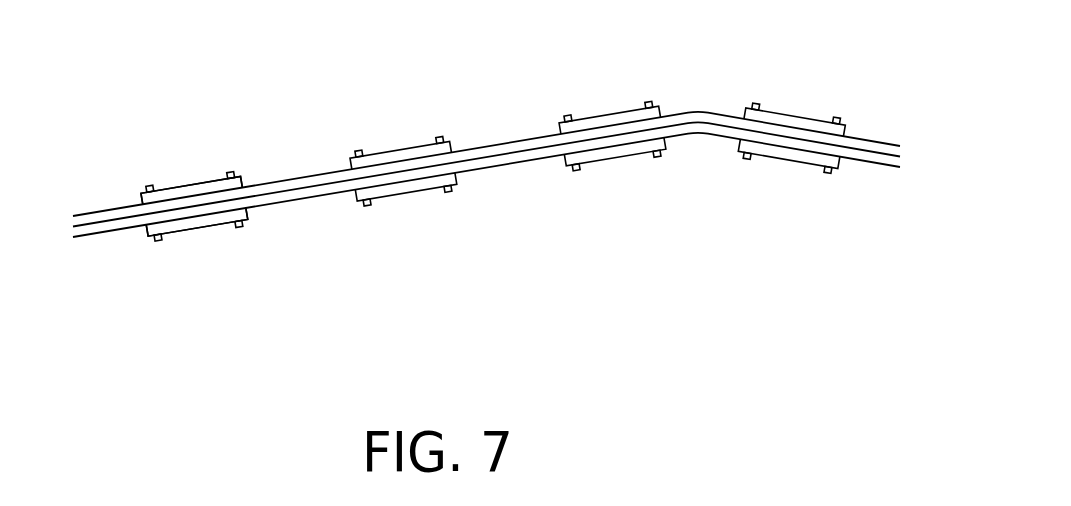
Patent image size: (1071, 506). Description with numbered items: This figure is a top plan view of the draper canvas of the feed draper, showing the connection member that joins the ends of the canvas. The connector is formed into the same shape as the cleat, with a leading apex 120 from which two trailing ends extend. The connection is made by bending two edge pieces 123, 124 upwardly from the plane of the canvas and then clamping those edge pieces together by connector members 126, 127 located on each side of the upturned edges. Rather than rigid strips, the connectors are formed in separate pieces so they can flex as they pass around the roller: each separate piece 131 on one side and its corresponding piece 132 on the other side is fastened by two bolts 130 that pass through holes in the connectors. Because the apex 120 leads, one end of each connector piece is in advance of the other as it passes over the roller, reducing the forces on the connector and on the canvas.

The apex 120 is at (754, 93).
The edge piece 123 is at (486, 135).
The edge piece 124 is at (486, 191).
The connector member 126 is at (190, 182).
The connector member 127 is at (198, 230).
The bolt 130 is at (207, 192).
The separate connector piece 131 is at (304, 132).
The separate connector piece 132 is at (321, 248).